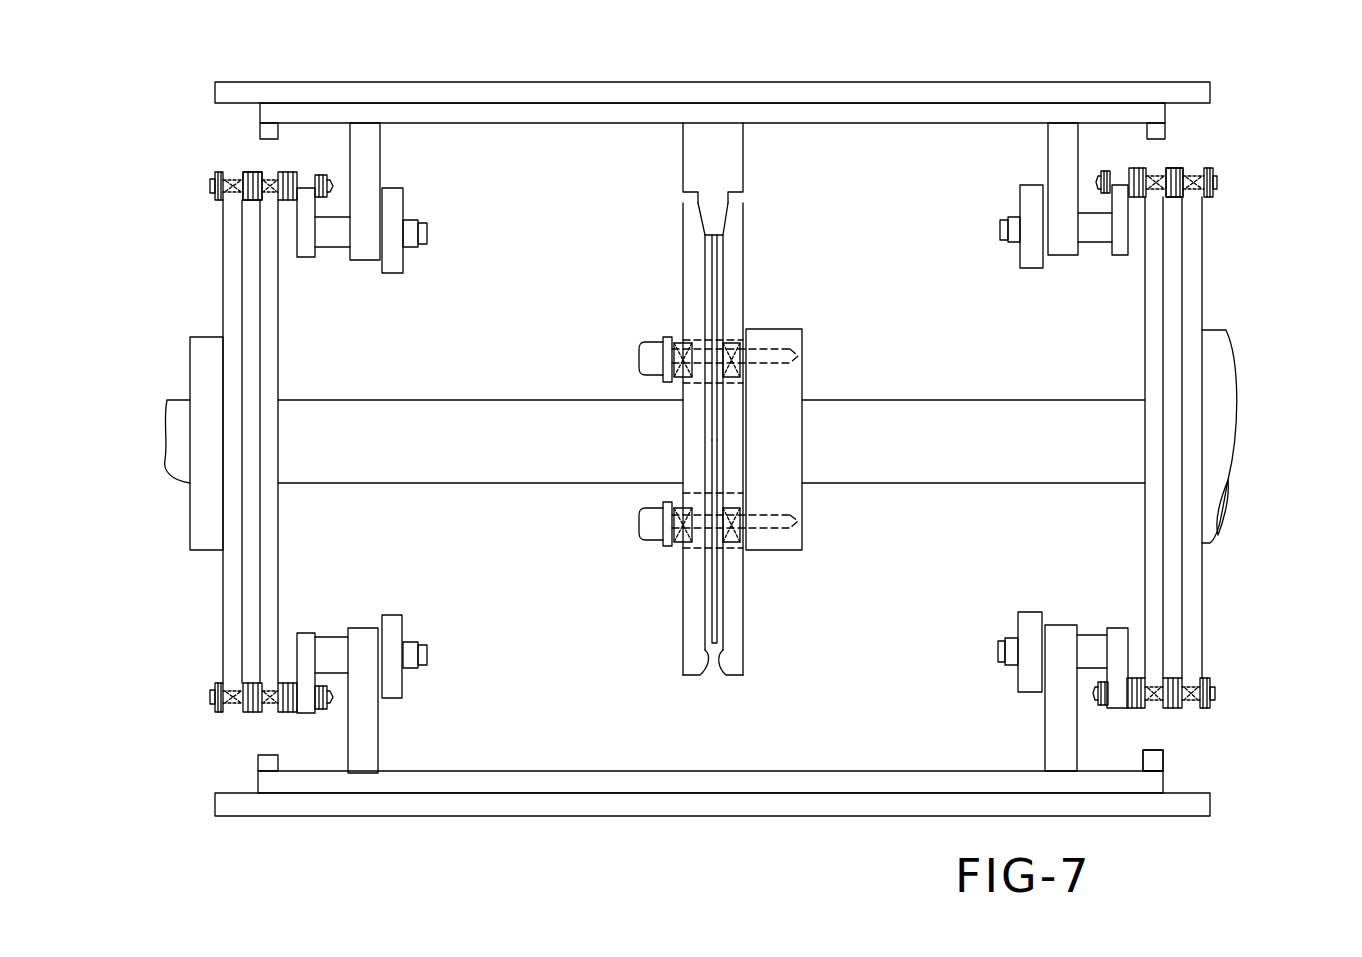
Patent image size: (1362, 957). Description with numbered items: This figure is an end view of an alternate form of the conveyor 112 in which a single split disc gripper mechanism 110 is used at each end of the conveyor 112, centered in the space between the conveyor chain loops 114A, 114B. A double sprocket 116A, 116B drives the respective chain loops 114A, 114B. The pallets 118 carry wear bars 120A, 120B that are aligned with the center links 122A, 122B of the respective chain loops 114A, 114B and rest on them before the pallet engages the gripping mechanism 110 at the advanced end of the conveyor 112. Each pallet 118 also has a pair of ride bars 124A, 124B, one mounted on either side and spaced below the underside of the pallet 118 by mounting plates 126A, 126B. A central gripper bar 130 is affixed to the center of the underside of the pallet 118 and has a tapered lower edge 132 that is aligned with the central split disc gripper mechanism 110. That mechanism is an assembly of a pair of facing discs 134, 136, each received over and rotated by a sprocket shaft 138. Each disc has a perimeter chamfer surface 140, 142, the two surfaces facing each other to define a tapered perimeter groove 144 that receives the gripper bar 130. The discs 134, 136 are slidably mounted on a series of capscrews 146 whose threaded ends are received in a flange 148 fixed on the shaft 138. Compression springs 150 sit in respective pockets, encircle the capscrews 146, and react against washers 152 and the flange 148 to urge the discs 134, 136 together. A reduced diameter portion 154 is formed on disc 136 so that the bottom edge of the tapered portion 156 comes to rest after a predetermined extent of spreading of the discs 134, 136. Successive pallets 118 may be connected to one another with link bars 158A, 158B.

The split disc gripper mechanism 110 is at (764, 255).
The conveyor 112 is at (1242, 264).
The conveyor chain loop 114A is at (215, 176).
The conveyor chain loop 114B is at (1218, 178).
The double sprocket 116A is at (208, 293).
The double sprocket 116B is at (1216, 332).
The pallet 118 is at (634, 48).
The wear bar 120A is at (259, 134).
The wear bar 120B is at (1165, 134).
The center link 122A is at (266, 176).
The center link 122B is at (1163, 176).
The ride bar 124A is at (297, 258).
The ride bar 124B is at (1110, 257).
The mounting plate 126A is at (366, 158).
The mounting plate 126B is at (1048, 149).
The central gripper bar 130 is at (691, 142).
The tapered lower edge 132 is at (716, 237).
The disc 134 is at (697, 282).
The disc 136 is at (741, 291).
The sprocket shaft 138 is at (418, 378).
The perimeter chamfer surface 140 is at (706, 680).
The perimeter chamfer surface 142 is at (729, 662).
The tapered perimeter groove 144 is at (713, 674).
The capscrew 146 is at (640, 352).
The flange 148 is at (788, 380).
The compression spring 150 is at (678, 343).
The washer 152 is at (676, 387).
The reduced diameter portion 154 is at (718, 625).
The tapered portion 156 is at (710, 244).
The link bar 158A is at (400, 196).
The link bar 158B is at (1018, 192).